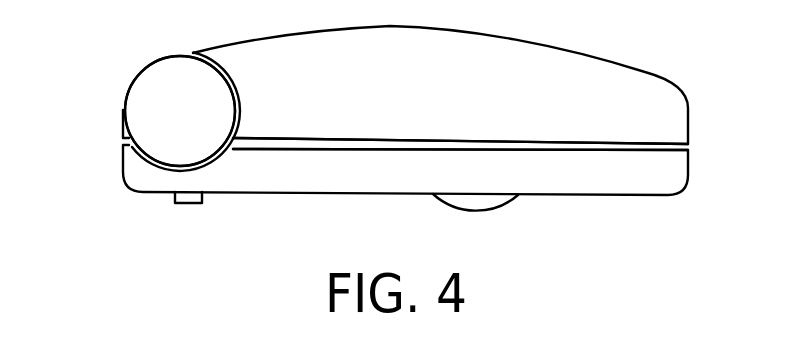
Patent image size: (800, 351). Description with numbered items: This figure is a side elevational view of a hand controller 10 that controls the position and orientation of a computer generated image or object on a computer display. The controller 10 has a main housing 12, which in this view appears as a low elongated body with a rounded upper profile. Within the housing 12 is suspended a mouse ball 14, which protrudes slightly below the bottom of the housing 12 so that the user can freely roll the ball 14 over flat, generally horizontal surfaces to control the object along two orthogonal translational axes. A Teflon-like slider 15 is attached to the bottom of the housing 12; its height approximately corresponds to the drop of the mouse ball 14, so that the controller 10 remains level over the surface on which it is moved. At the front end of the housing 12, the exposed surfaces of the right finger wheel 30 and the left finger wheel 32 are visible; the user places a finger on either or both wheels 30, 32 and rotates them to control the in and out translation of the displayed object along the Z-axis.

The hand controller 10 is at (432, 103).
The main housing 12 is at (675, 128).
The mouse ball 14 is at (485, 200).
The slider 15 is at (188, 197).
The right finger wheel 30 is at (143, 102).
The left finger wheel 32 is at (180, 111).